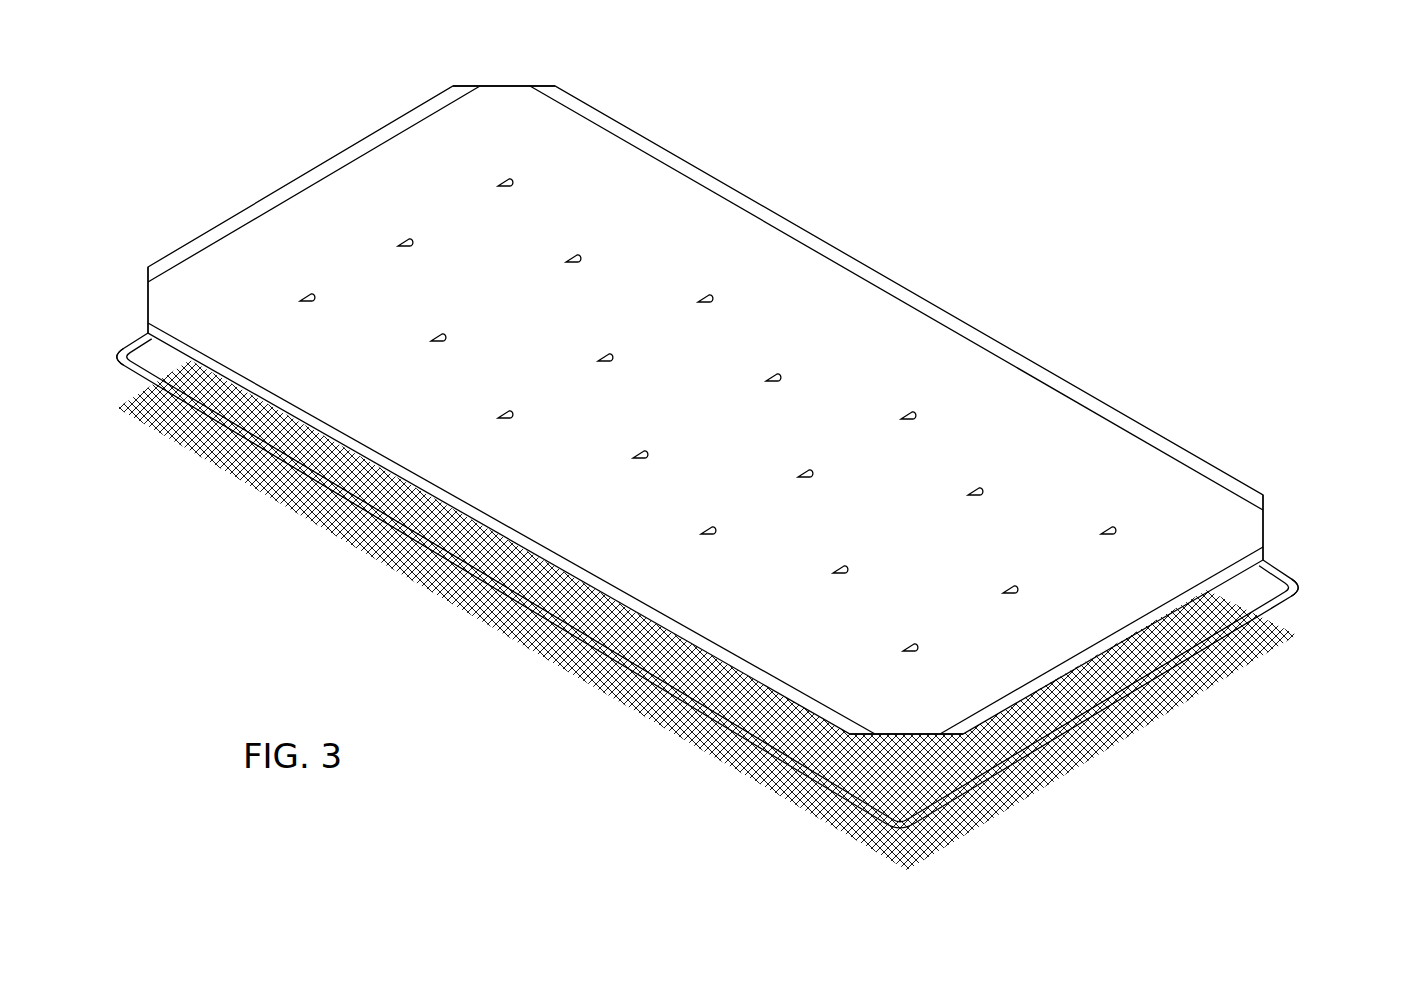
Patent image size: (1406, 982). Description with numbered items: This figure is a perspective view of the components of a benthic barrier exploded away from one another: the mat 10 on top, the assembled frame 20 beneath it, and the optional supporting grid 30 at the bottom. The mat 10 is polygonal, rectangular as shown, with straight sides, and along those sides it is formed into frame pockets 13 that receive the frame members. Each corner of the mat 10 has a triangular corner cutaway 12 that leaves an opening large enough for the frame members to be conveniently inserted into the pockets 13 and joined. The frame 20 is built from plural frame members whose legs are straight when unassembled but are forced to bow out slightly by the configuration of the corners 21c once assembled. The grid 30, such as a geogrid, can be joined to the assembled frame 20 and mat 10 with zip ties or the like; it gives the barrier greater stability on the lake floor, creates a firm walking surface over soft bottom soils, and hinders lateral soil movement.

The mat 10 is at (992, 389).
The corner cutaway 12 is at (499, 86).
The frame pockets 13 is at (302, 188).
The frame 20 is at (387, 555).
The corner 21c is at (113, 355).
The grid 30 is at (770, 795).